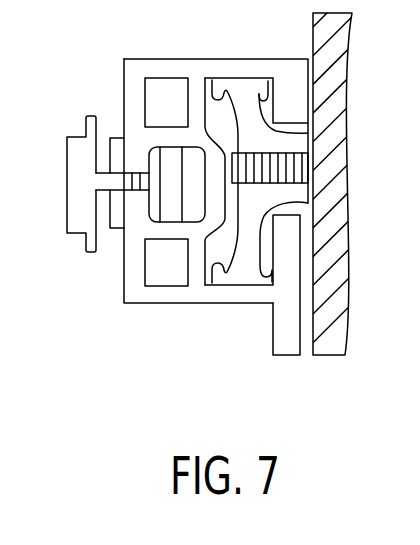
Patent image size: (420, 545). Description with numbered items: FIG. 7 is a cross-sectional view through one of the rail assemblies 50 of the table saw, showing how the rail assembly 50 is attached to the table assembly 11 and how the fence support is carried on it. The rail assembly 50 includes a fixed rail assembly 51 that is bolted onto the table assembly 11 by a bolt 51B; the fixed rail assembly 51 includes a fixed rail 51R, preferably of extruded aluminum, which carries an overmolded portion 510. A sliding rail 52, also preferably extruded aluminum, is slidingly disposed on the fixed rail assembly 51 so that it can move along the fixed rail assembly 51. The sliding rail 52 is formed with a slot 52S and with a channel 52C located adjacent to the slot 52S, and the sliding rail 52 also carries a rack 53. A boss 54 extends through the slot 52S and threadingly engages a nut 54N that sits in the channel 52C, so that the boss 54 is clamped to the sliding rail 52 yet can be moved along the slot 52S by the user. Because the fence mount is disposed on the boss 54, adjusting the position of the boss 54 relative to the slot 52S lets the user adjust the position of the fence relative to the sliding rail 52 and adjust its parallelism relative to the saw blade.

The table assembly 11 is at (328, 193).
The rail assembly 50 is at (58, 355).
The fixed rail assembly 51 is at (243, 271).
The bolt 51B is at (260, 177).
The fixed rail 51R is at (267, 145).
The overmolded portion 510 is at (233, 78).
The sliding rail 52 is at (150, 62).
The channel 52C is at (149, 209).
The slot 52S is at (133, 175).
The rack 53 is at (287, 347).
The boss 54 is at (66, 188).
The nut 54N is at (172, 207).